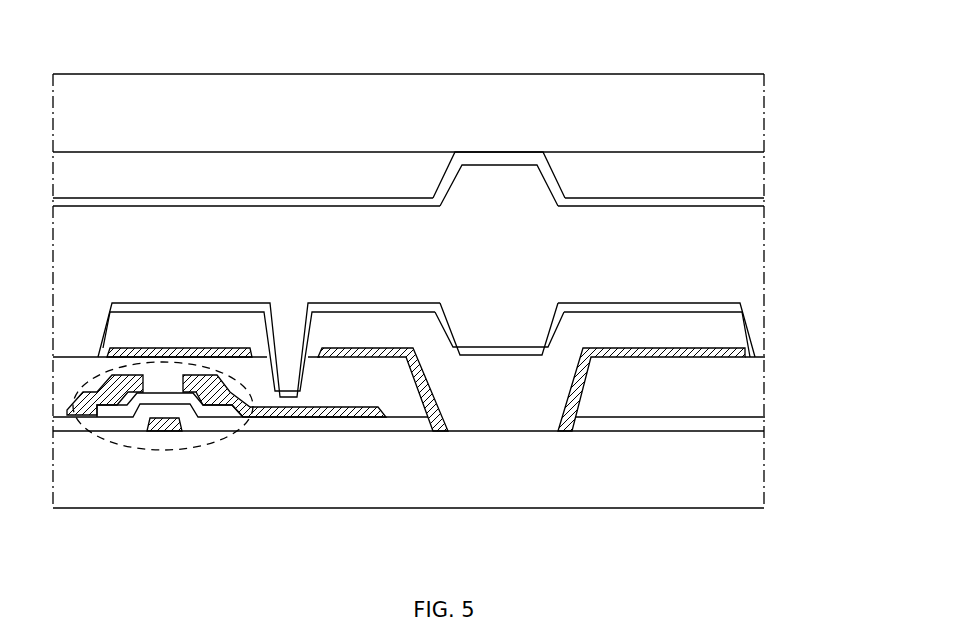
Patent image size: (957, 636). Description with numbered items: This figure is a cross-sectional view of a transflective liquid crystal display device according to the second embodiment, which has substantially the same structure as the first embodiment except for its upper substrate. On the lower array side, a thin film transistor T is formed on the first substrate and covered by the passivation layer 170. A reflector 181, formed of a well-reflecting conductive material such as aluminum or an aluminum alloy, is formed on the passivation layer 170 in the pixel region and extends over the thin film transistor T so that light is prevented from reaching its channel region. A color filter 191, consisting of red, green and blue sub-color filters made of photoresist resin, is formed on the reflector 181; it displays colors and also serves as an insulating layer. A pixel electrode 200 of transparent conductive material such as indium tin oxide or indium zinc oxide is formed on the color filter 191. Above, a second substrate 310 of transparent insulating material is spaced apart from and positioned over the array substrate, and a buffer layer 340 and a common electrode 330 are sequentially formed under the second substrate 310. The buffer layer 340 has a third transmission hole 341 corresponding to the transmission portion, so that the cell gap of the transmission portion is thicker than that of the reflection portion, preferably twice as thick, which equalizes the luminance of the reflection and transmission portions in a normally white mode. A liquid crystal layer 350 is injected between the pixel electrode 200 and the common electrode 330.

The second substrate 310 is at (398, 90).
The buffer layer 340 is at (182, 167).
The common electrode 330 is at (297, 203).
The third transmission hole 341 is at (497, 196).
The liquid crystal layer 350 is at (738, 258).
The passivation layer 170 is at (80, 352).
The reflector 181 is at (176, 348).
The color filter 191 is at (203, 320).
The pixel electrode 200 is at (498, 345).
The thin film transistor T is at (163, 450).